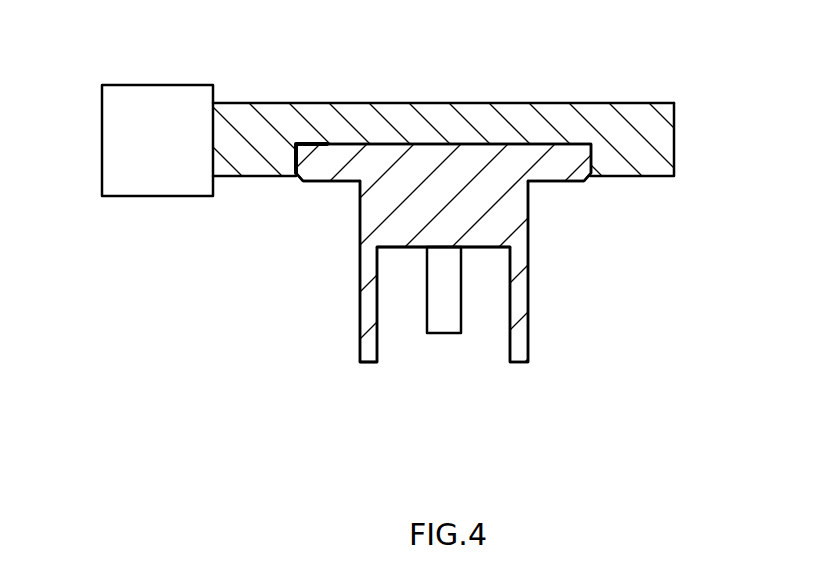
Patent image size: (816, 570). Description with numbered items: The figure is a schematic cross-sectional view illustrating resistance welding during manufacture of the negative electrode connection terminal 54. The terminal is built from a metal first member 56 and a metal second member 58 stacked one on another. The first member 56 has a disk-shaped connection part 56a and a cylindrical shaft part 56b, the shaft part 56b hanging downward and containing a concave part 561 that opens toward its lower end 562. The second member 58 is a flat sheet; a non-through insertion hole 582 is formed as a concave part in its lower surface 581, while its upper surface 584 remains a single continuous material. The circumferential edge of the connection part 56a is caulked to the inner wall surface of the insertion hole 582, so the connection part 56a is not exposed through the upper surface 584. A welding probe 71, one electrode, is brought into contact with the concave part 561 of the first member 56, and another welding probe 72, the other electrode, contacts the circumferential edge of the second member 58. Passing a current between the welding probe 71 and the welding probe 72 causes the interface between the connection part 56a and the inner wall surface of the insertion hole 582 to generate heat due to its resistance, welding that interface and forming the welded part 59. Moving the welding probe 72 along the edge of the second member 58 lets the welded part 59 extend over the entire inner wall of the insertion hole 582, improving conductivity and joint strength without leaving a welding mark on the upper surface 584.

The negative electrode connection terminal 54 is at (312, 100).
The second member 58 is at (485, 134).
The lower surface of the second member 581 is at (658, 178).
The insertion hole 582 is at (505, 152).
The upper surface of the second member 584 is at (640, 102).
The first member 56 is at (634, 218).
The connection part 56a is at (548, 163).
The shaft part 56b is at (523, 265).
The concave part 561 is at (483, 248).
The leg end 562 is at (365, 362).
The welded part 59 is at (295, 162).
The welding probe 71 is at (442, 333).
The welding probe 72 is at (102, 152).